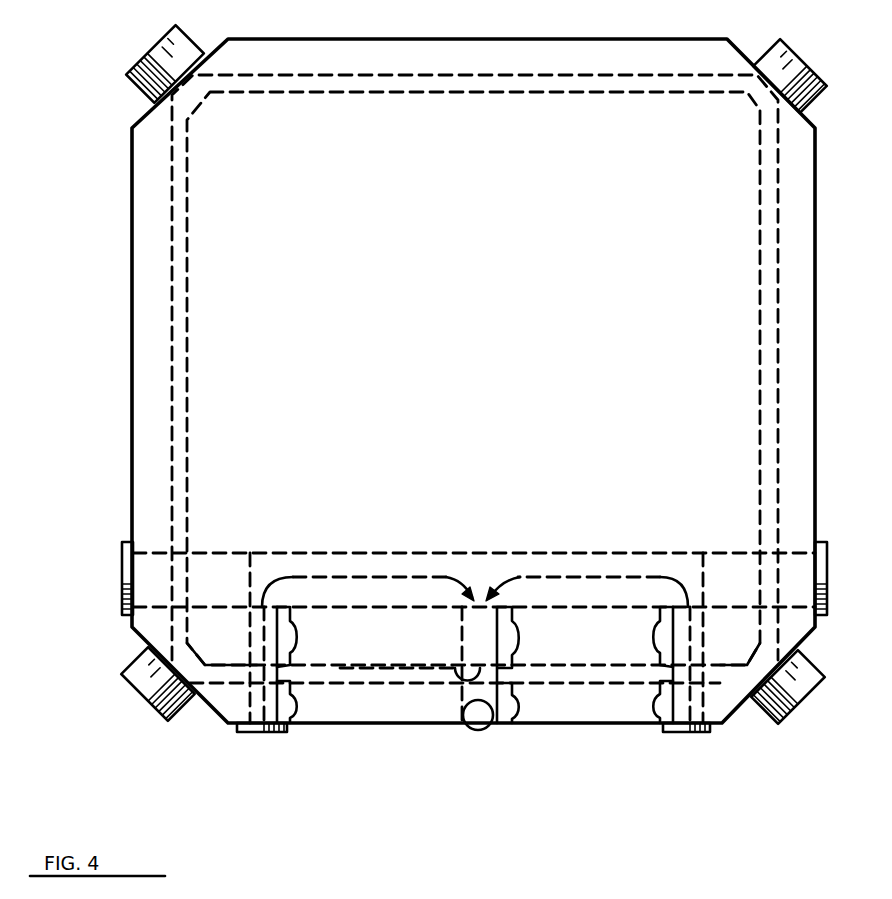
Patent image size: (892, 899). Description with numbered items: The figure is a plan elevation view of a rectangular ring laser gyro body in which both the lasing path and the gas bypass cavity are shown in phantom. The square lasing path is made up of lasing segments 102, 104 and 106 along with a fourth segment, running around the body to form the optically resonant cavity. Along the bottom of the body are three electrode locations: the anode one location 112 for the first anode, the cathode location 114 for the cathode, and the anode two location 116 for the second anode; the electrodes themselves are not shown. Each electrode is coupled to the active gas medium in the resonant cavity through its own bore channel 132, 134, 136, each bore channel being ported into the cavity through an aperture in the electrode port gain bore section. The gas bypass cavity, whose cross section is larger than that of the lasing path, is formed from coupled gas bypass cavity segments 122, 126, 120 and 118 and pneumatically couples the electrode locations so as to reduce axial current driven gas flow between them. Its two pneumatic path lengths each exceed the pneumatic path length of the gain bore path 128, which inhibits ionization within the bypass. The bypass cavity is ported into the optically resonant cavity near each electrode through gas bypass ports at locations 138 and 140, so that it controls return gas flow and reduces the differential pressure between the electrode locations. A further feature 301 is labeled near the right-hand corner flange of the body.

The lasing segment 102 is at (182, 304).
The lasing segment 104 is at (527, 83).
The lasing segment 106 is at (768, 302).
The anode 1 location 112 is at (257, 733).
The cathode location 114 is at (478, 731).
The anode 2 location 116 is at (683, 733).
The gas bypass cavity segment 118 is at (658, 645).
The gas bypass cavity segment 120 is at (588, 605).
The gas bypass cavity segment 122 is at (366, 605).
The gas bypass cavity segment 126 is at (513, 640).
The gain bore path 128 is at (366, 669).
The bore channel 132 is at (293, 700).
The bore channel 134 is at (293, 637).
The bore channel 136 is at (660, 703).
The gas bypass port location 138 is at (257, 672).
The gas bypass port location 140 is at (457, 676).
The right corner flange 301 is at (710, 676).